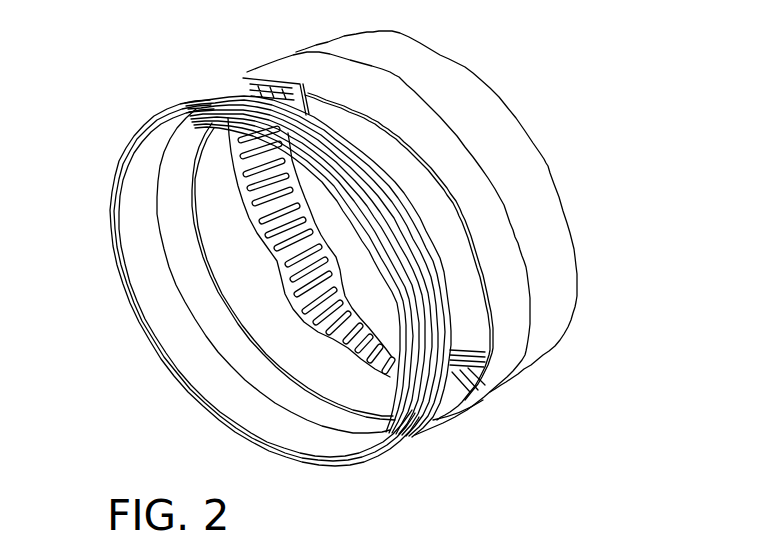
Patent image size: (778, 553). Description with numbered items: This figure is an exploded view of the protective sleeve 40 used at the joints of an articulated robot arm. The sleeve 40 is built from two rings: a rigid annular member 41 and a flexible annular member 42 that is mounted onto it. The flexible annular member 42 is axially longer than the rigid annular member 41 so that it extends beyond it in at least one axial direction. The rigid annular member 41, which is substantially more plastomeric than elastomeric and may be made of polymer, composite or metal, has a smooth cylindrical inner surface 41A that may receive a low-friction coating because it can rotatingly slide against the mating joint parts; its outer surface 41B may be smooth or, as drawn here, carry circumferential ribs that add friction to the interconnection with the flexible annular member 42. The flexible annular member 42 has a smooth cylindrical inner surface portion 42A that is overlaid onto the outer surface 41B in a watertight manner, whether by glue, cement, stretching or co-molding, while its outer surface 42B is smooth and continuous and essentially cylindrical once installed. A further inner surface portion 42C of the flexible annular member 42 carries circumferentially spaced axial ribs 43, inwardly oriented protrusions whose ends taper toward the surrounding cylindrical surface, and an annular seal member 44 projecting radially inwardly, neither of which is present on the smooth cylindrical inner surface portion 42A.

The sleeve 40 is at (435, 257).
The rigid annular member 41 is at (275, 233).
The smooth cylindrical inner surface 41A is at (197, 367).
The outer surface 41B is at (365, 203).
The flexible annular member 42 is at (437, 257).
The smooth cylindrical inner surface portion 42A is at (440, 420).
The outer surface 42B is at (528, 275).
The inner surface portion 42C is at (233, 140).
The axial ribs 43 is at (338, 255).
The annular seal member 44 is at (375, 312).